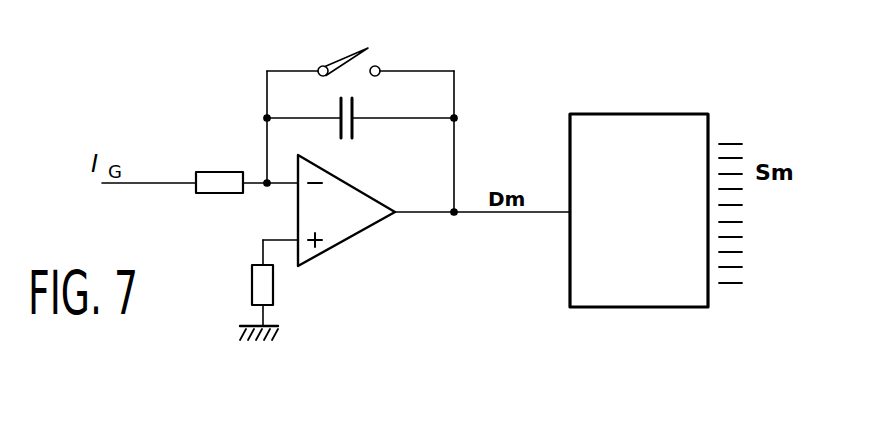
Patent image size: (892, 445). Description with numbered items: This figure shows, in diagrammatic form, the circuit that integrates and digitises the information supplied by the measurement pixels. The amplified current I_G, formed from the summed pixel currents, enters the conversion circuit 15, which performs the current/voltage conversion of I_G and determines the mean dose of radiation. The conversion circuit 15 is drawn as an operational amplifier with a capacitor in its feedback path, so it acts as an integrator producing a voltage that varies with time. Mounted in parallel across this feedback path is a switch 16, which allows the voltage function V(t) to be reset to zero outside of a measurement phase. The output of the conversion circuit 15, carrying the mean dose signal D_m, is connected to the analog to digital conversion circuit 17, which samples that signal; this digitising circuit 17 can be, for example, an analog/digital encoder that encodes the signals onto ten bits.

The conversion circuit 15 is at (247, 128).
The switch 16 is at (375, 62).
The analog to digital conversion circuit 17 is at (637, 122).